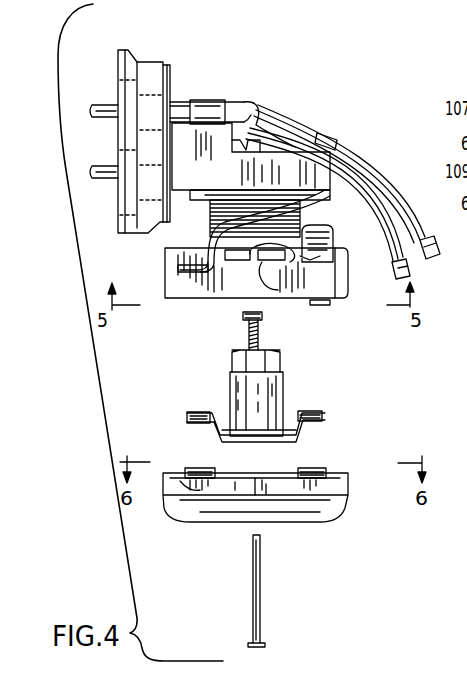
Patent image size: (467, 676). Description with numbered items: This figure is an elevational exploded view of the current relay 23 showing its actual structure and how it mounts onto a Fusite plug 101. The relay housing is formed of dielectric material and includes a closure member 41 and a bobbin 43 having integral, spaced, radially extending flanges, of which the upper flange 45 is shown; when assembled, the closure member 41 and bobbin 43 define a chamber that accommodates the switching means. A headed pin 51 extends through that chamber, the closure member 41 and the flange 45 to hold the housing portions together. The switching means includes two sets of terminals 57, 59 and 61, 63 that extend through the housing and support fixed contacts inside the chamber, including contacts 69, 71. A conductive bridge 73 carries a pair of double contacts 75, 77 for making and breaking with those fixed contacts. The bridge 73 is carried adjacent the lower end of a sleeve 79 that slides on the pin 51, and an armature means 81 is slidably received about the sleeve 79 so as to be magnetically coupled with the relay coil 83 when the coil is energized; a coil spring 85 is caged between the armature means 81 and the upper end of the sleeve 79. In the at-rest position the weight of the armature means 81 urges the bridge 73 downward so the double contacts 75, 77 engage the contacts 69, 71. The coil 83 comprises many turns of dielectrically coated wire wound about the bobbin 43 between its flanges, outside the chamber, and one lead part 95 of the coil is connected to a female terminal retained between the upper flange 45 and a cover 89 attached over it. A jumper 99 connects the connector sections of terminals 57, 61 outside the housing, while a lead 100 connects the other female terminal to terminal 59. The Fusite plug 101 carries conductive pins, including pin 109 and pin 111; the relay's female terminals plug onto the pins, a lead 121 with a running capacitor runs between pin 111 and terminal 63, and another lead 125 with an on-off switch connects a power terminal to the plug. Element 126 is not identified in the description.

The relay 23 is at (311, 90).
The closure member 41 is at (326, 518).
The bobbin 43 is at (350, 268).
The flange 45 is at (224, 190).
The headed pin 51 is at (264, 646).
The terminal 57 is at (318, 227).
The terminal 59 is at (180, 266).
The terminal 61 is at (349, 487).
The terminal 63 is at (182, 484).
The contact 69 is at (315, 470).
The contact 71 is at (200, 472).
The bridge 73 is at (218, 420).
The double contact 75 is at (316, 410).
The double contact 77 is at (195, 410).
The sleeve 79 is at (243, 315).
The armature means 81 is at (278, 390).
The relay coil 83 is at (215, 222).
The coil spring 85 is at (249, 343).
The cover 89 is at (270, 152).
The lead part 95 is at (278, 285).
The jumper 99 is at (333, 292).
The lead 100 is at (250, 271).
The Fusite plug 101 is at (131, 34).
The conductive pin 109 is at (108, 164).
The conductive pin 111 is at (103, 103).
The lead 121 is at (386, 166).
The lead 125 is at (402, 246).
The cable 126 is at (368, 195).